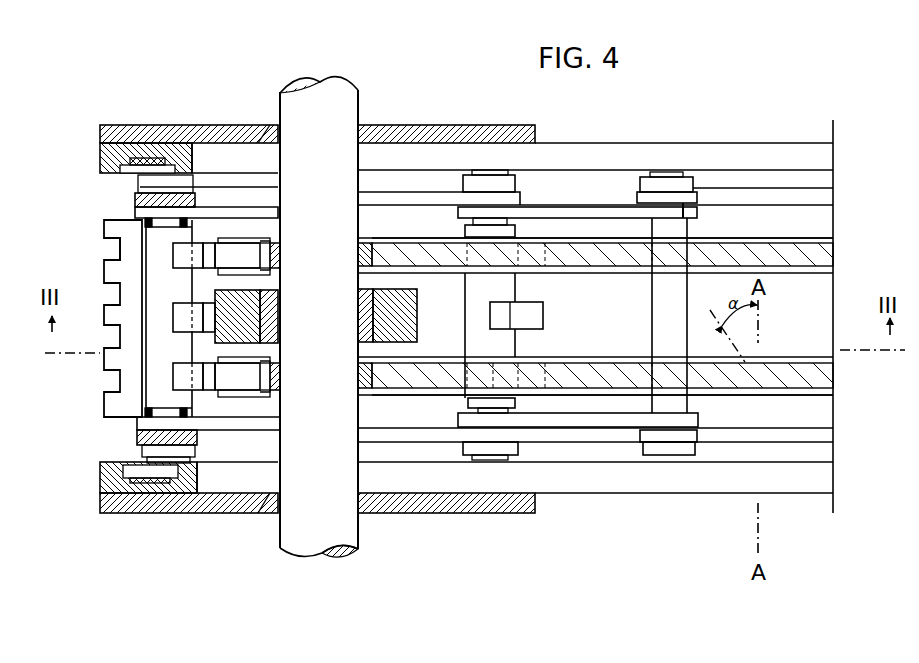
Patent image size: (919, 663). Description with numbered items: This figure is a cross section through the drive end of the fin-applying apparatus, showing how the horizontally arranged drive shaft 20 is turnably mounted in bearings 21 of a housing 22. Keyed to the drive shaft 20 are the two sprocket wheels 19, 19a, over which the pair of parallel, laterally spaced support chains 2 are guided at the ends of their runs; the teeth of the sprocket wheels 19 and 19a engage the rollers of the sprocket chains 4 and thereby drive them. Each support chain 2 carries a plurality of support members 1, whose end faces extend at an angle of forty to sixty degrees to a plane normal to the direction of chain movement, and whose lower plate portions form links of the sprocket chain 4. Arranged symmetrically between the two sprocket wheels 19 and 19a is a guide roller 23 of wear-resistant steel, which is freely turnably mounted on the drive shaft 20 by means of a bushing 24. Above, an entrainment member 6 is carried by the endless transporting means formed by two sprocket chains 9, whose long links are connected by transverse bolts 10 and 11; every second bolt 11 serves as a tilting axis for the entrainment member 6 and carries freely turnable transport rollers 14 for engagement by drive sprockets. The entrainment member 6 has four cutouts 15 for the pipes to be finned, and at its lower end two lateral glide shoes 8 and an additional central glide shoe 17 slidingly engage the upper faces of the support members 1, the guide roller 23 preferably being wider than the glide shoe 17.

The support member 1 is at (246, 248).
The support chain 2 is at (820, 253).
The sprocket chain 4 is at (745, 238).
The entrainment member 6 is at (114, 407).
The glide shoe 8 is at (190, 255).
The sprocket chain 9 is at (137, 198).
The transverse bolt 10 is at (675, 227).
The bolt 11 is at (478, 413).
The transport roller 14 is at (666, 178).
The cutout 15 is at (108, 252).
The additional glide shoe 17 is at (183, 308).
The sprocket wheel 19 is at (360, 248).
The sprocket wheel 19a is at (370, 392).
The drive shaft 20 is at (307, 528).
The bearing 21 is at (365, 130).
The housing 22 is at (236, 132).
The guide roller 23 is at (405, 318).
The bushing 24 is at (112, 158).